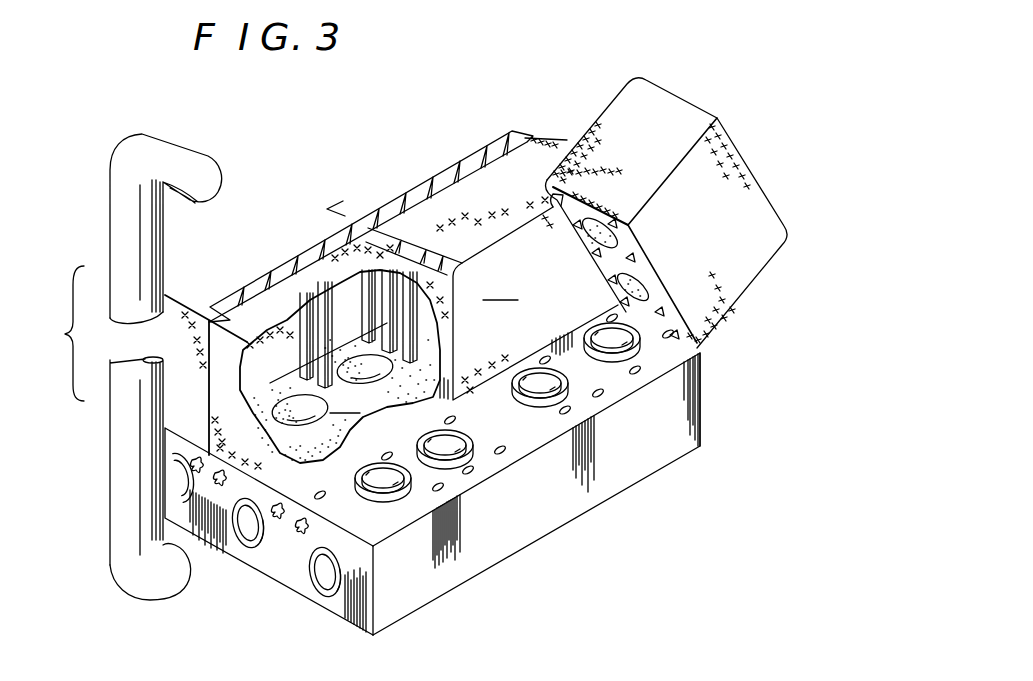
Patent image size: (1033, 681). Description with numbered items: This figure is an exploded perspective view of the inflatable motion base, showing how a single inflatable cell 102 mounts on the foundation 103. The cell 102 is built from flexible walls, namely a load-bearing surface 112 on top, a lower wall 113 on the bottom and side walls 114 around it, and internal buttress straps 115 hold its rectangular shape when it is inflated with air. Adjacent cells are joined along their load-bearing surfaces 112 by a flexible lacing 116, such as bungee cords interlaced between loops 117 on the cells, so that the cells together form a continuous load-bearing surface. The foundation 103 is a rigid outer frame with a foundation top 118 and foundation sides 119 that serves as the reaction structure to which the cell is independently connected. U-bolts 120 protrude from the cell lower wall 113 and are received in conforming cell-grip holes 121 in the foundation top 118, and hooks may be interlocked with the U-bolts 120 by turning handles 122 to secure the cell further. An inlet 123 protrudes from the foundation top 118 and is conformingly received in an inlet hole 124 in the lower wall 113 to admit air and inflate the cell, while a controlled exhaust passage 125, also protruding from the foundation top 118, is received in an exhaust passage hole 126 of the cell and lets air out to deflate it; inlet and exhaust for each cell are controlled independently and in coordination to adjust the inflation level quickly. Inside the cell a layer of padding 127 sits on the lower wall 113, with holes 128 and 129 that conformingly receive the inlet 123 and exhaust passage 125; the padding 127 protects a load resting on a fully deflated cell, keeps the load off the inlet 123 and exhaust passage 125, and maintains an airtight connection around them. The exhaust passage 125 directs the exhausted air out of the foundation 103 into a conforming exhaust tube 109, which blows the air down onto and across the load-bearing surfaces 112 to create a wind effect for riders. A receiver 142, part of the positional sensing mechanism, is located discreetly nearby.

The inflatable cell 102 is at (677, 92).
The foundation 103 is at (437, 583).
The exhaust tube 109 is at (127, 540).
The load-bearing surface 112 is at (487, 192).
The lower wall 113 is at (697, 362).
The side wall 114 is at (622, 116).
The internal buttress strap 115 is at (348, 283).
The flexible lacing 116 is at (413, 198).
The loop 117 is at (453, 175).
The foundation top 118 is at (604, 391).
The foundation side 119 is at (300, 577).
The U-bolt 120 is at (545, 194).
The cell-grip hole 121 is at (640, 378).
The handle 122 is at (374, 636).
The inlet 123 is at (545, 370).
The inlet hole 124 is at (627, 233).
The controlled exhaust passage 125 is at (253, 538).
The exhaust passage hole 126 is at (648, 300).
The padding 127 is at (640, 266).
The padding hole 128 is at (353, 357).
The padding hole 129 is at (282, 395).
The receiver 142 is at (667, 671).